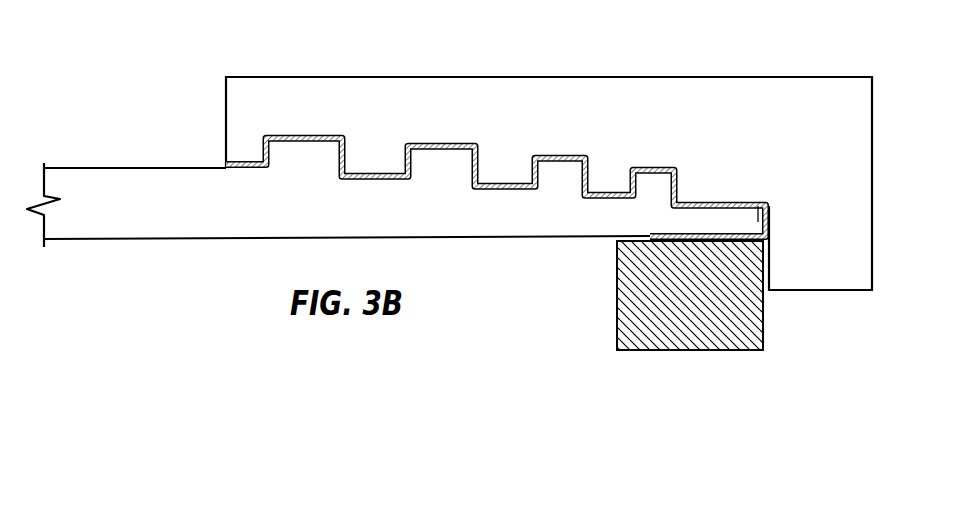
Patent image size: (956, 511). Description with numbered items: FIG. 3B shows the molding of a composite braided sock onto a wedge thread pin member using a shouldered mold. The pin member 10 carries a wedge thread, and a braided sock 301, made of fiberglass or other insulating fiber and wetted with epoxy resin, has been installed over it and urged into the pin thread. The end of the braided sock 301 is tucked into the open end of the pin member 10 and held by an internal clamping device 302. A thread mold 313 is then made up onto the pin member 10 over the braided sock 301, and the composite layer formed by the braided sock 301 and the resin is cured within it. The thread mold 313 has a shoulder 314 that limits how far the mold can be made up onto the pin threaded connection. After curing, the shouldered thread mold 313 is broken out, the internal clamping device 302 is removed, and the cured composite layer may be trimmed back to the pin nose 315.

The pin member 10 is at (138, 240).
The braided sock 301 is at (375, 181).
The internal clamping device 302 is at (688, 352).
The thread mold 313 is at (752, 75).
The shoulder 314 is at (769, 222).
The pin nose 315 is at (750, 219).